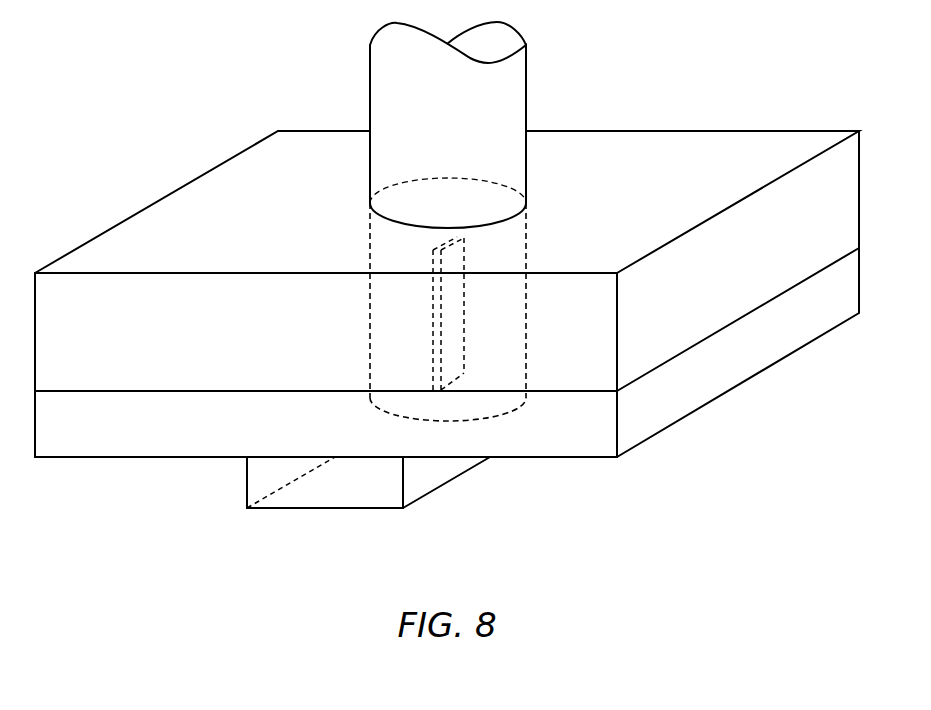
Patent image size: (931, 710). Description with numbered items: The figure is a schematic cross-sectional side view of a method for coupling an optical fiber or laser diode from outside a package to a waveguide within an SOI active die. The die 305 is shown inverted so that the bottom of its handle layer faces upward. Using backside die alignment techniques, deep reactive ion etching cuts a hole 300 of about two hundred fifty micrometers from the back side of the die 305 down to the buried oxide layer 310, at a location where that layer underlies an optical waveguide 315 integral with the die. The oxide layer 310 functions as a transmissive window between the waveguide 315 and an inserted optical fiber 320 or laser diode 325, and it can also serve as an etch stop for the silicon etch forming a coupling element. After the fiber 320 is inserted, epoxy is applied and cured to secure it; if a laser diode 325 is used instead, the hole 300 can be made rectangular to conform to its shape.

The hole 300 is at (370, 200).
The die 305 is at (820, 185).
The buried oxide layer 310 is at (820, 318).
The optical waveguide 315 is at (338, 508).
The optical fiber 320 is at (513, 130).
The laser diode 325 is at (464, 345).